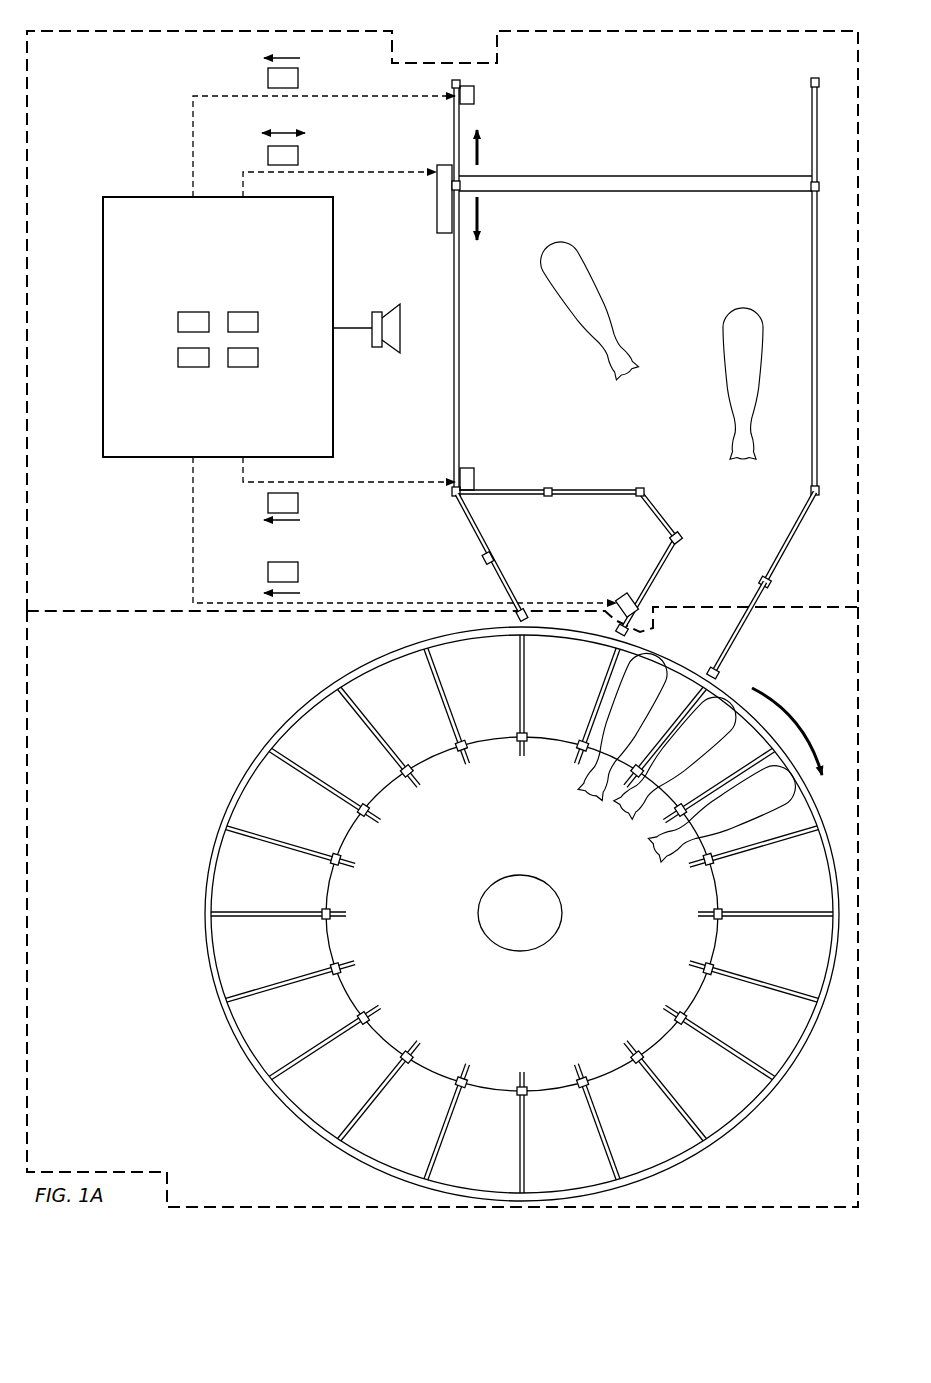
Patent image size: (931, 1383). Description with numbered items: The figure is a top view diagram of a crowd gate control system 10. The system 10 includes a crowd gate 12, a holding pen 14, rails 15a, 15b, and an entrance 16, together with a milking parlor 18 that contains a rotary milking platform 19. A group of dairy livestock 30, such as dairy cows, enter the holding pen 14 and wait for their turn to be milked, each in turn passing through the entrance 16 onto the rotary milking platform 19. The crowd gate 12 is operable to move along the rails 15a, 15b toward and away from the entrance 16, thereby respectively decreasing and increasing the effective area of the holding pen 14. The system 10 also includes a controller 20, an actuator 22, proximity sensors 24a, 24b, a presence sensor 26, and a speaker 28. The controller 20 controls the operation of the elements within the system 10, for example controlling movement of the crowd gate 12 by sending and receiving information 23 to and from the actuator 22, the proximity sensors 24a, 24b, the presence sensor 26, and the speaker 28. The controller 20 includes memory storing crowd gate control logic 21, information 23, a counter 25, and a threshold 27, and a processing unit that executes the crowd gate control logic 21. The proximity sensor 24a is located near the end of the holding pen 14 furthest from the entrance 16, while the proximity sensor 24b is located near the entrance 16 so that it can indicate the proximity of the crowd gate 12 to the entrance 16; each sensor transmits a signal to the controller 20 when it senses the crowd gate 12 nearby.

The crowd gate control system 10 is at (733, 76).
The crowd gate 12 is at (625, 176).
The holding pen 14 is at (682, 277).
The rail 15a is at (812, 150).
The rail 15b is at (480, 138).
The entrance 16 is at (708, 622).
The milking parlor 18 is at (137, 749).
The rotary milking platform 19 is at (232, 1048).
The controller 20 is at (144, 194).
The crowd gate control logic 21 is at (240, 368).
The actuator 22 is at (437, 220).
The information 23 is at (300, 572).
The proximity sensor 24a is at (474, 95).
The proximity sensor 24b is at (474, 478).
The counter 25 is at (190, 368).
The presence sensor 26 is at (622, 595).
The threshold 27 is at (245, 312).
The speaker 28 is at (377, 348).
The dairy livestock 30 is at (548, 318).